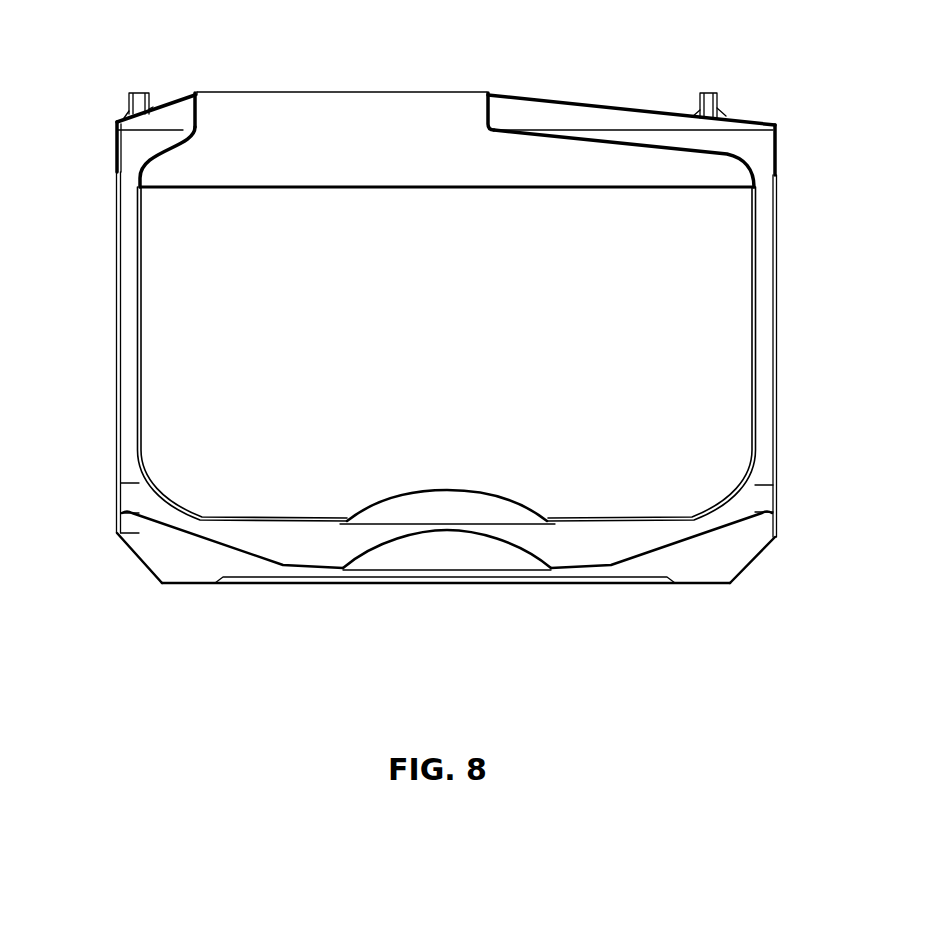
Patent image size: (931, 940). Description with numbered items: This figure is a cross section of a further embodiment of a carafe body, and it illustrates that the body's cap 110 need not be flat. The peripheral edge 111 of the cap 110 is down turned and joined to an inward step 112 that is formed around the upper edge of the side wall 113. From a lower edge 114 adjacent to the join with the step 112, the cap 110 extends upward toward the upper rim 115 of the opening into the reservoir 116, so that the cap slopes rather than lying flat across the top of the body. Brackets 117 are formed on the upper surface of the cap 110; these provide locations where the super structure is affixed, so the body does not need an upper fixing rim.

The cap 110 is at (580, 104).
The peripheral edge 111 is at (778, 155).
The inward step 112 is at (118, 155).
The side wall 113 is at (776, 302).
The lower edge 114 is at (113, 120).
The upper rim 115 is at (485, 103).
The reservoir 116 is at (283, 523).
The brackets 117 is at (708, 93).